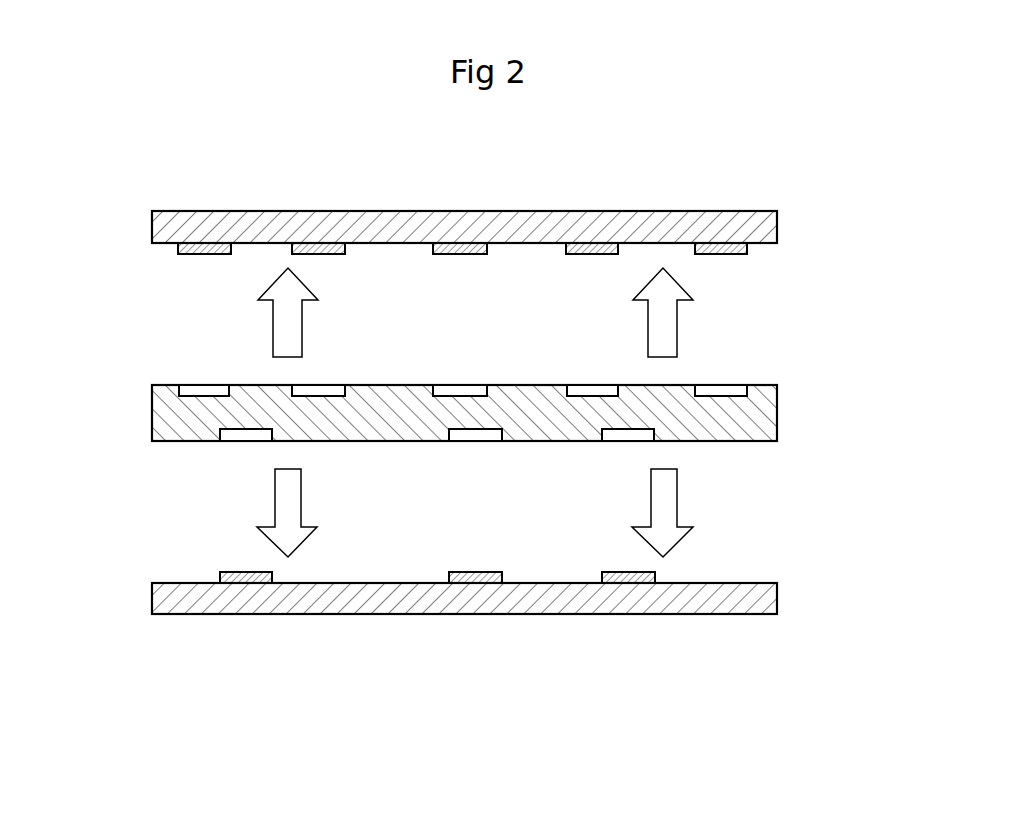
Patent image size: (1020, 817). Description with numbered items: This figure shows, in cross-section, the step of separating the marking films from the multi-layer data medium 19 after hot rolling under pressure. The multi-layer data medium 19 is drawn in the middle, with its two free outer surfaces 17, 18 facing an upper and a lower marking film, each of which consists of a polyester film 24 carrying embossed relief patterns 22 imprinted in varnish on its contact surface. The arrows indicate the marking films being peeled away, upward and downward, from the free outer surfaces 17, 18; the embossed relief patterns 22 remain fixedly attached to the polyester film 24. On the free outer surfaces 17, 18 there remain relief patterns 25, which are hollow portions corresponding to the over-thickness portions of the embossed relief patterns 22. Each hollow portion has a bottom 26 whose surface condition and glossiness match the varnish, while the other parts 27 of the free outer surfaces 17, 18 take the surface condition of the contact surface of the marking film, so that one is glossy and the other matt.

The free outer surface 17 is at (523, 388).
The free outer surface 18 is at (525, 441).
The multi-layer data medium 19 is at (798, 406).
The embossed relief patterns 22 is at (320, 249).
The polyester film 24 is at (172, 222).
The relief patterns 25 is at (192, 388).
The bottom 26 is at (208, 388).
The other parts 27 is at (250, 388).